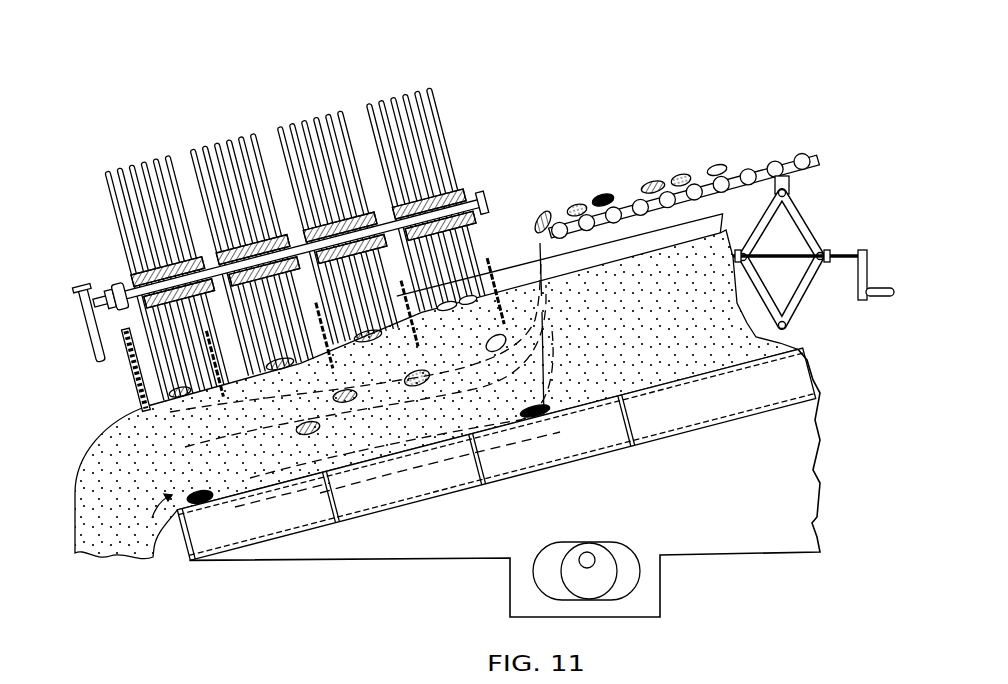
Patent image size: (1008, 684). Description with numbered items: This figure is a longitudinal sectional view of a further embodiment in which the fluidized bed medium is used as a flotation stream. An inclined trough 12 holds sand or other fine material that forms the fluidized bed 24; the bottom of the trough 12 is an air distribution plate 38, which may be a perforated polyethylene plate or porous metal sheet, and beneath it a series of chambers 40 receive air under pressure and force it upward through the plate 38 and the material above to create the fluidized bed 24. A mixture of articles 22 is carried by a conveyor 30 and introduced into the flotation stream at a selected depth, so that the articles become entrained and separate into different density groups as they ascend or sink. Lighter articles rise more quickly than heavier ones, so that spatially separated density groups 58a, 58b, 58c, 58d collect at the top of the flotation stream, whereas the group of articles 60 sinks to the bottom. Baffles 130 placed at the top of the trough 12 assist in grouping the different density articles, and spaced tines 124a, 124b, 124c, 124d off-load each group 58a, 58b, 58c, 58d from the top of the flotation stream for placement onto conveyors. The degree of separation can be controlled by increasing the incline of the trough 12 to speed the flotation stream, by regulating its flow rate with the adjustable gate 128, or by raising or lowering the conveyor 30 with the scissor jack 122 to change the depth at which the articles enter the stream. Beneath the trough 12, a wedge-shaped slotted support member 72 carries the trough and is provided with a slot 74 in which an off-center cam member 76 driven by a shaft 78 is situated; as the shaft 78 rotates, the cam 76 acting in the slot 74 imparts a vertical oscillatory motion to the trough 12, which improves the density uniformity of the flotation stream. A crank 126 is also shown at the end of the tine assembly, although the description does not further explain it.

The trough 12 is at (730, 229).
The mixture of articles 22 is at (583, 201).
The fluidized bed 24 is at (520, 283).
The conveyor 30 is at (757, 172).
The air distribution plate 38 is at (716, 375).
The chambers 40 is at (262, 528).
The density group 58a is at (188, 398).
The density group 58b is at (282, 370).
The density group 58c is at (382, 346).
The density group 58d is at (453, 313).
The group of articles 60 is at (192, 492).
The support member 72 is at (767, 503).
The slot 74 is at (631, 558).
The cam member 76 is at (604, 565).
The shaft 78 is at (587, 551).
The scissor jack 122 is at (806, 222).
The tine 124a is at (131, 168).
The tine 124b is at (203, 143).
The tine 124c is at (291, 123).
The tine 124d is at (384, 100).
The crank handle 126 is at (102, 292).
The adjustable gate 128 is at (147, 406).
The baffles 130 is at (240, 392).